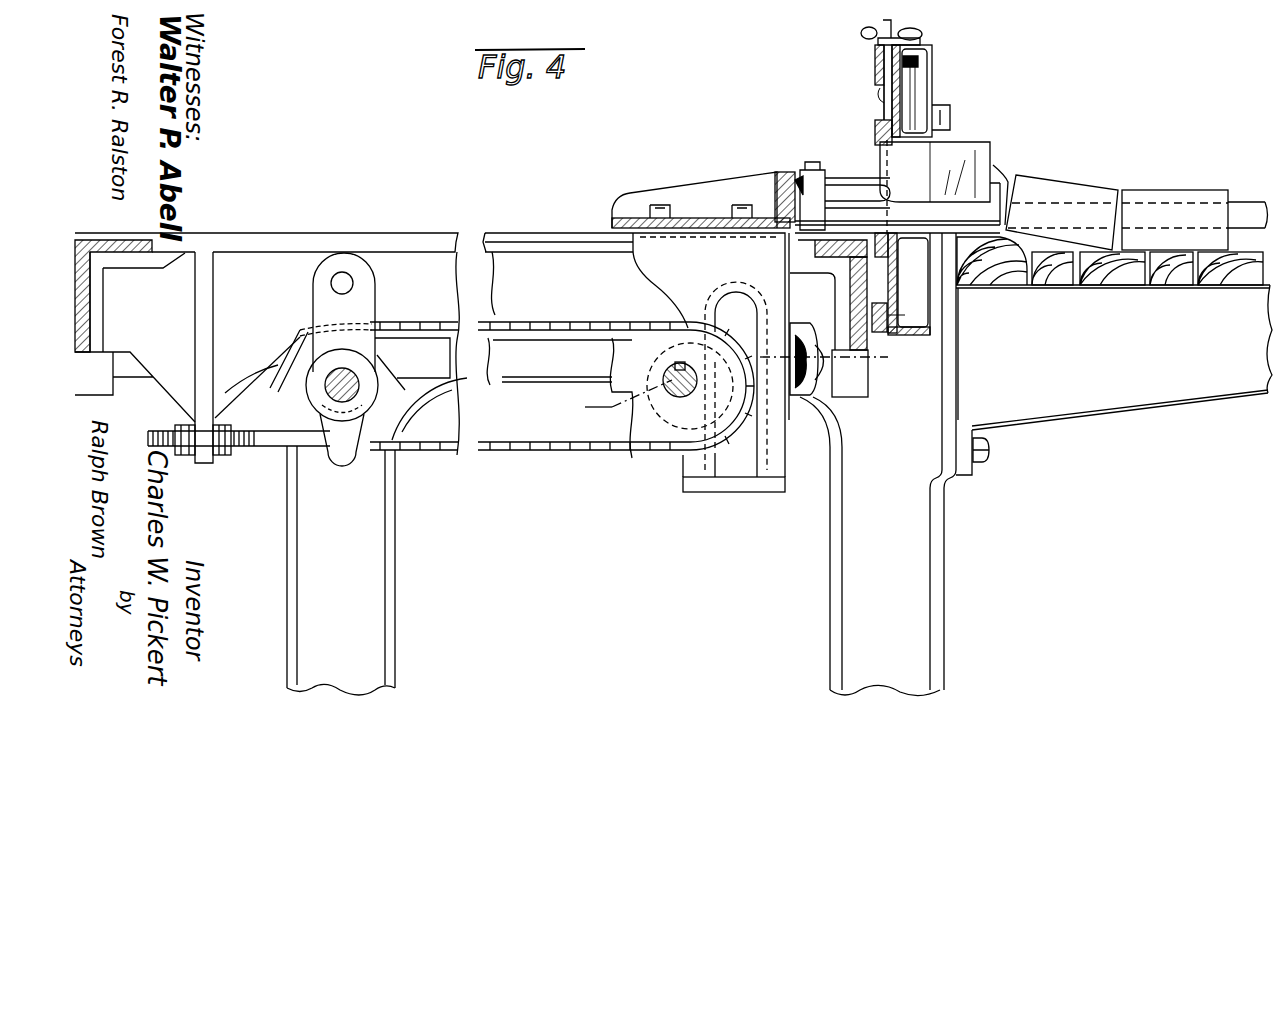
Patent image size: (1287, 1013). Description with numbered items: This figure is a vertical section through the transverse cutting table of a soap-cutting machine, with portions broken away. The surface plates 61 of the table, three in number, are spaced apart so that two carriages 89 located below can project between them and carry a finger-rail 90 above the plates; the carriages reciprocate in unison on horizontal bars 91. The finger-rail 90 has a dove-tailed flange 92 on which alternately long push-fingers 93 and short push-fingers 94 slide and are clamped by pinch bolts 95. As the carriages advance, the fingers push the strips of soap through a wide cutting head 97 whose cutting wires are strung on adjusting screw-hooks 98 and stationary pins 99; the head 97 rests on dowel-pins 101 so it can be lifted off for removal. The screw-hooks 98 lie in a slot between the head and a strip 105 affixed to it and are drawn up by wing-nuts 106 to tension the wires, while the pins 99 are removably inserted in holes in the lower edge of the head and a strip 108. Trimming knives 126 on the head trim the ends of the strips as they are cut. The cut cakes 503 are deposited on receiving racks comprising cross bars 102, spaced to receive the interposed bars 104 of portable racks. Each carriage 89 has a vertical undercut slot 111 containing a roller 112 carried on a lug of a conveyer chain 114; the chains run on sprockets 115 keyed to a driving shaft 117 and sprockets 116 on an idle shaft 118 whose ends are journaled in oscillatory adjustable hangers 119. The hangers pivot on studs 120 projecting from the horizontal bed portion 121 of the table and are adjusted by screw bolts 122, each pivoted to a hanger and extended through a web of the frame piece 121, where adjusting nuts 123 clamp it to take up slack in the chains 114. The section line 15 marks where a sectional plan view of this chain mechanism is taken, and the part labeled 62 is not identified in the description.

The section line 15 is at (888, 357).
The surface plates 61 is at (508, 231).
The frame 62 is at (1033, 439).
The carriages 89 is at (642, 265).
The finger-rail 90 is at (672, 190).
The horizontal bars 91 is at (522, 366).
The dove-tailed flange 92 is at (792, 182).
The long push-fingers 93 is at (1235, 205).
The short push-fingers 94 is at (1000, 186).
The pinch bolts 95 is at (812, 162).
The cutting head 97 is at (906, 96).
The adjusting screw-hooks 98 is at (877, 88).
The stationary pins 99 is at (906, 315).
The dowel-pins 101 is at (912, 70).
The receiving rack cross bars 102 is at (1243, 272).
The interposed bars of portable racks 104 is at (1163, 272).
The strip 105 is at (875, 65).
The wing-nuts 106 is at (862, 35).
The strip 108 is at (874, 303).
The vertical undercut slots 111 is at (738, 468).
The rollers 112 is at (738, 336).
The conveyer chains 114 is at (475, 452).
The sprockets 115 is at (637, 428).
The sprockets 116 is at (403, 395).
The driving shaft 117 is at (664, 378).
The idle shaft 118 is at (332, 375).
The oscillatory adjustable hangers 119 is at (367, 298).
The studs 120 is at (331, 283).
The horizontal bed portion 121 is at (248, 258).
The screw bolts 122 is at (273, 448).
The adjusting nuts 123 is at (226, 456).
The trimming knives 126 is at (967, 156).
The cakes 503 is at (1160, 190).